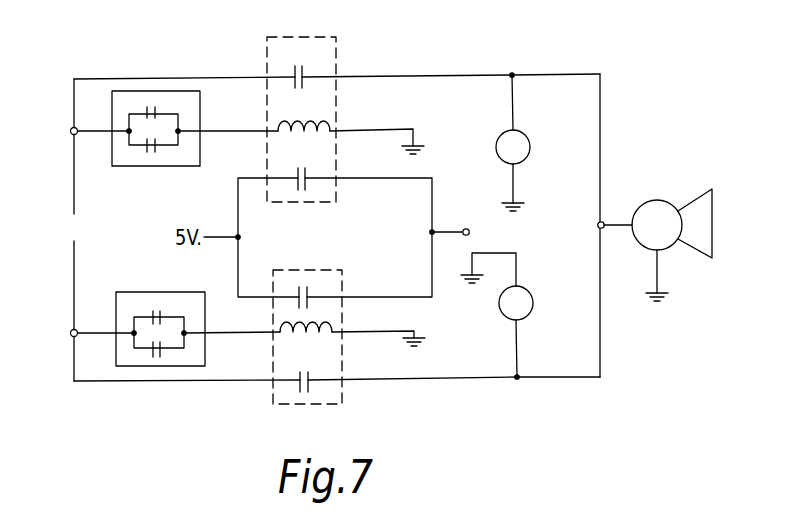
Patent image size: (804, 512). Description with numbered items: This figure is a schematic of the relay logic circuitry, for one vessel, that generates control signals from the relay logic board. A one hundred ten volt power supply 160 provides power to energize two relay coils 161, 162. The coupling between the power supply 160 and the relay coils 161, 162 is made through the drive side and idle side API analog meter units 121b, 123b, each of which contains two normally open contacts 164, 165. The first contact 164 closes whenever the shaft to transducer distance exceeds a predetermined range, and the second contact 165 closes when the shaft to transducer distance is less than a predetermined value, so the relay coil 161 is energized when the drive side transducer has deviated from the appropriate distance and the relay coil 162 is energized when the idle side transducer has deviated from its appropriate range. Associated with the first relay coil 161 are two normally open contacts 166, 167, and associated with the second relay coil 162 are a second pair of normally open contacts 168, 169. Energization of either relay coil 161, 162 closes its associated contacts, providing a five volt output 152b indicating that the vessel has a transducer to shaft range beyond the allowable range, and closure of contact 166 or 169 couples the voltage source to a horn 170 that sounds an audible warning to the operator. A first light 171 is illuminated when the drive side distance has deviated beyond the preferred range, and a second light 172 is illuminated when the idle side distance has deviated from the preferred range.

The 110 volt power supply 160 is at (67, 243).
The API analog panel meter contact unit 121b is at (200, 112).
The API analog panel meter contact unit 123b is at (206, 352).
The first normally open contact 164 is at (155, 107).
The second normally open contact 165 is at (155, 152).
The normally open contact 166 is at (305, 73).
The normally open contact 167 is at (308, 181).
The normally open contact 168 is at (310, 292).
The normally open contact 169 is at (312, 383).
The first relay coil 161 is at (318, 121).
The second relay coil 162 is at (322, 335).
The five volt output 152b is at (444, 229).
The first light 171 is at (531, 139).
The second light 172 is at (533, 296).
The horn 170 is at (666, 200).